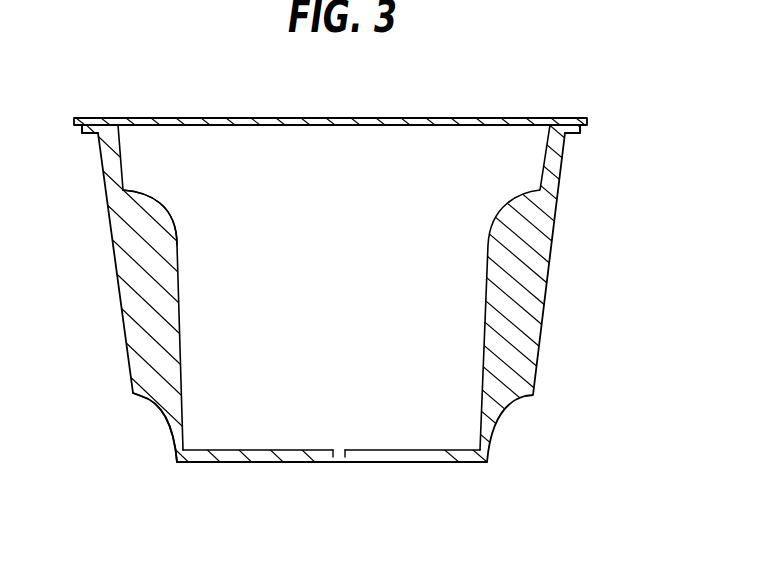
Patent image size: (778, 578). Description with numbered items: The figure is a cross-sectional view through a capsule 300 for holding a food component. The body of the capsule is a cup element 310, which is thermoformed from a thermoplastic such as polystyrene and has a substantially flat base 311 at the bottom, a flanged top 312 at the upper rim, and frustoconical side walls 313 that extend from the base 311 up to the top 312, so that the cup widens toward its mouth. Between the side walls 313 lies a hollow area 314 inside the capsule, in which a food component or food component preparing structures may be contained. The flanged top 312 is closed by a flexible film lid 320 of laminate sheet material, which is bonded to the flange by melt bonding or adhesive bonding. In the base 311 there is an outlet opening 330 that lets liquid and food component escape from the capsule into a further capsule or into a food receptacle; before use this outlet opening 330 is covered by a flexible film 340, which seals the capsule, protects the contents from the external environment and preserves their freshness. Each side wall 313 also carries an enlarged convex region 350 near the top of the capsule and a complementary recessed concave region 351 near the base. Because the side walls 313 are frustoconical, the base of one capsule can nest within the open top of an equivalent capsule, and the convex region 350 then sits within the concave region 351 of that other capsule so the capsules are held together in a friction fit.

The capsule 300 is at (371, 289).
The cup element 310 is at (550, 270).
The base 311 is at (447, 457).
The flanged top 312 is at (583, 132).
The frustoconical side walls 313 is at (530, 345).
The hollow area 314 is at (280, 245).
The flexible film lid 320 is at (419, 118).
The outlet opening 330 is at (336, 463).
The flexible film 340 is at (252, 463).
The enlarged convex region 350 is at (148, 227).
The recessed concave region 351 is at (157, 430).